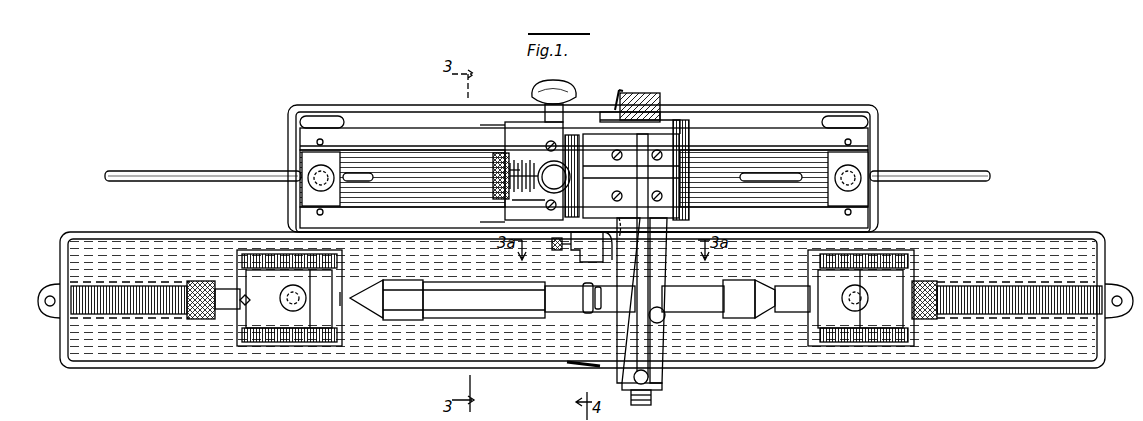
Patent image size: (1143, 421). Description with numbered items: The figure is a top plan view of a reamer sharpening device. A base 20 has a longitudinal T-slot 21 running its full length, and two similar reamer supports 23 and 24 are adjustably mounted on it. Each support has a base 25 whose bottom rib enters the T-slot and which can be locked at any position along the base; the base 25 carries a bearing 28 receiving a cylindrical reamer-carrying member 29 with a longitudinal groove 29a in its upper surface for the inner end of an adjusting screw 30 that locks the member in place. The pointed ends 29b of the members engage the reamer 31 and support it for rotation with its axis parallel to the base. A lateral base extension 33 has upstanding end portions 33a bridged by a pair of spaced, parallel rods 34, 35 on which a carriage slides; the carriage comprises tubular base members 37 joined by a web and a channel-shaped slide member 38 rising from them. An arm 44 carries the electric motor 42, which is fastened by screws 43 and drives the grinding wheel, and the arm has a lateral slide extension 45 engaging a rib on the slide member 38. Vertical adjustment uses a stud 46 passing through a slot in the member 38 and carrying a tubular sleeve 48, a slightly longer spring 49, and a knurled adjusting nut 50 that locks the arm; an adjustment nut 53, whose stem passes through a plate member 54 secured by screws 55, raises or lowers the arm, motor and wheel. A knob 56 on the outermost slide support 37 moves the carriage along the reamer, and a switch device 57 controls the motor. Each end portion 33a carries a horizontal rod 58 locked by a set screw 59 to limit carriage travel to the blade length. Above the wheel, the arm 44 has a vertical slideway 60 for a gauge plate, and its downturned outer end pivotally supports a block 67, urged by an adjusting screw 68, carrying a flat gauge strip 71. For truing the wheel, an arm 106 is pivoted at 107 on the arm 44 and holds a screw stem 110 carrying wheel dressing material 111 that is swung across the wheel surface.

The base 20 is at (1072, 240).
The T-slot 21 is at (168, 276).
The reamer support 23 is at (876, 354).
The reamer support 24 is at (270, 340).
The support base 25 is at (240, 338).
The bearing 28 is at (318, 330).
The reamer-carrying member 29 is at (195, 318).
The longitudinal groove 29a is at (242, 298).
The pointed end 29b is at (366, 292).
The adjusting screw 30 is at (288, 288).
The reamer 31 is at (494, 312).
The lateral base extension 33 is at (296, 108).
The upstanding end portion 33a is at (325, 120).
The rod 34 is at (372, 135).
The rod 35 is at (420, 196).
The tubular base member 37 is at (500, 127).
The channel-shaped slide member 38 is at (516, 122).
The electric motor 42 is at (690, 170).
The screw 43 is at (655, 196).
The arm 44 is at (660, 262).
The lateral slide extension 45 is at (572, 136).
The stud 46 is at (495, 170).
The tubular sleeve 48 is at (555, 182).
The spring 49 is at (522, 162).
The knurled adjusting nut 50 is at (500, 182).
The adjustment nut 53 is at (548, 416).
The plate member 54 is at (528, 201).
The screw 55 is at (551, 141).
The knob 56 is at (565, 80).
The switch device 57 is at (610, 96).
The rod 58 is at (176, 170).
The set screw 59 is at (312, 170).
The vertical slideway 60 is at (664, 320).
The block 67 is at (664, 388).
The adjusting screw 68 is at (632, 378).
The gauge strip 71 is at (654, 397).
The arm 106 is at (592, 256).
The pivot 107 is at (594, 314).
The screw stem 110 is at (556, 250).
The wheel dressing material 111 is at (627, 226).